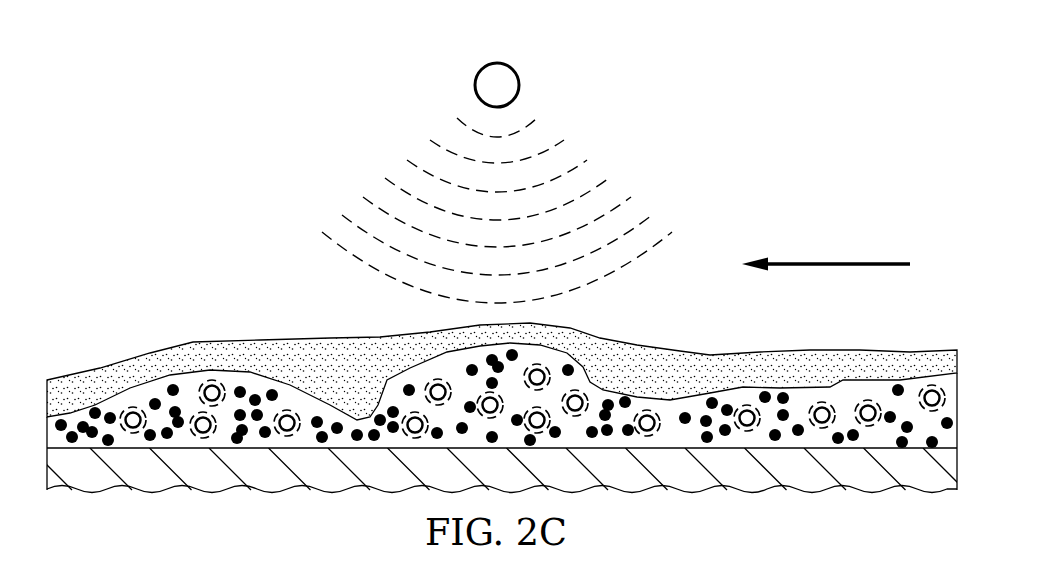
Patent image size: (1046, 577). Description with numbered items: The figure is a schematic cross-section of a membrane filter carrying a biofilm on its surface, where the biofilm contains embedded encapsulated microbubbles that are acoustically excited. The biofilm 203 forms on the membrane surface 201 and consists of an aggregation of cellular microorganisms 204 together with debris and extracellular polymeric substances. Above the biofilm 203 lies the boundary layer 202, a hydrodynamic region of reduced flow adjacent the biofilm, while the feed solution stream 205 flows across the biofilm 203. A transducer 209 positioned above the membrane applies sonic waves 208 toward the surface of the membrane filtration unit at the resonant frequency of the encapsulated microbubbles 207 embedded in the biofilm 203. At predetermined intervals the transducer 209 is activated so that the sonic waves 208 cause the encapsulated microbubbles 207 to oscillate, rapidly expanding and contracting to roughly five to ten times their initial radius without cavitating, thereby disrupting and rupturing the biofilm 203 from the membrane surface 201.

The membrane surface 201 is at (676, 437).
The boundary layer 202 is at (297, 340).
The biofilm 203 is at (722, 400).
The cellular microorganisms 204 is at (782, 393).
The feed solution stream 205 is at (837, 262).
The encapsulated microbubbles 207 is at (868, 400).
The sonic waves 208 is at (366, 175).
The transducer 209 is at (510, 84).